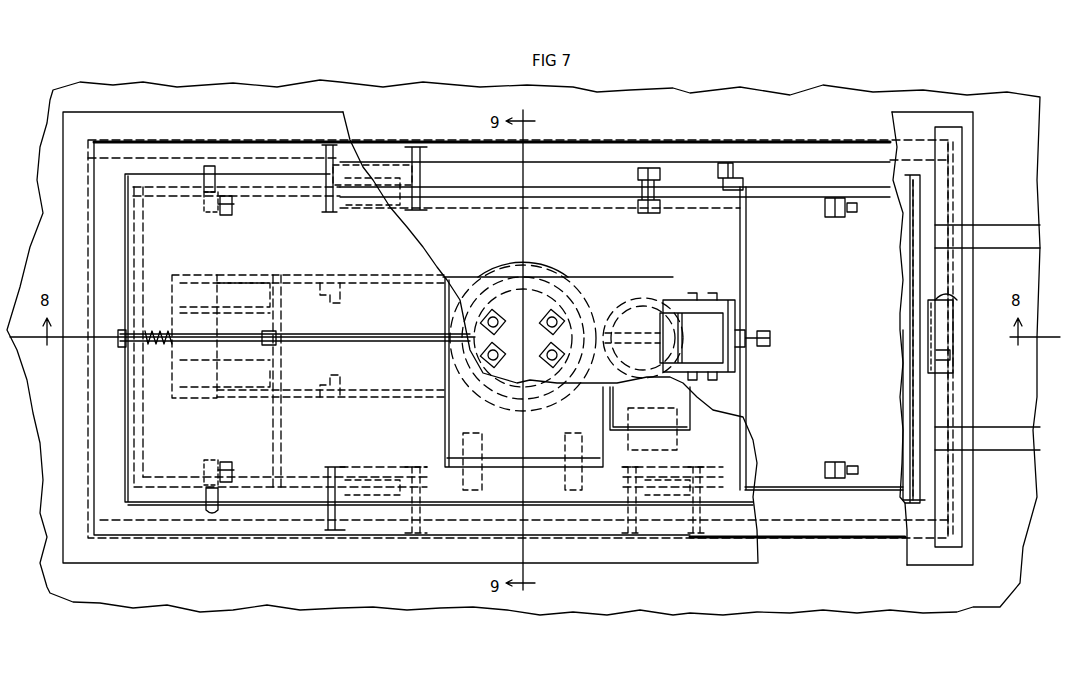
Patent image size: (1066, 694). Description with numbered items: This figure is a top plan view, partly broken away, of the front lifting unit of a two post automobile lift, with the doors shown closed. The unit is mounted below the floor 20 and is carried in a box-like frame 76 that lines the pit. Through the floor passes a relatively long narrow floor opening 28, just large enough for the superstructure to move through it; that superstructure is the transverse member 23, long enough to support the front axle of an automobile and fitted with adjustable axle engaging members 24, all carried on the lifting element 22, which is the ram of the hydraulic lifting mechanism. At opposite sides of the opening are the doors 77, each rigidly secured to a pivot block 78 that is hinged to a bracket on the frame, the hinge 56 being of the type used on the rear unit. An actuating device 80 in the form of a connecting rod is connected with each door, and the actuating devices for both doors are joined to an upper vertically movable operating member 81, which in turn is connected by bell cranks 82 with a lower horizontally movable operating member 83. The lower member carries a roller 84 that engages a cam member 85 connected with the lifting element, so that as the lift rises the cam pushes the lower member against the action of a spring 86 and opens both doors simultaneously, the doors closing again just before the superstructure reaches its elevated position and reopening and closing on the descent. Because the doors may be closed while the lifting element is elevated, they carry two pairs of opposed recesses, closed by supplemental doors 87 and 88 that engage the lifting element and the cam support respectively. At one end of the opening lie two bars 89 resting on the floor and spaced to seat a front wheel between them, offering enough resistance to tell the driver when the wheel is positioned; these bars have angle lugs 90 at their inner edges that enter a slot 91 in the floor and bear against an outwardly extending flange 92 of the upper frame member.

The floor 20 is at (816, 614).
The lifting element 22 is at (553, 303).
The transverse member 23 is at (357, 284).
The adjustable axle engaging members 24 is at (195, 284).
The floor opening 28 is at (910, 185).
The hinge 56 is at (370, 178).
The box-like frame 76 is at (953, 500).
The doors 77 is at (146, 270).
The pivot block 78 is at (212, 166).
The actuating device 80 is at (226, 214).
The upper vertically movable operating member 81 is at (903, 348).
The bell cranks 82 is at (266, 173).
The lower horizontally movable operating member 83 is at (740, 267).
The roller 84 is at (679, 318).
The cam member 85 is at (691, 338).
The spring 86 is at (158, 342).
The supplemental door 87 is at (452, 420).
The supplemental door 88 is at (682, 417).
The bars 89 is at (1003, 248).
The angle lugs 90 is at (946, 325).
The slot 91 is at (955, 297).
The flange 92 is at (936, 355).